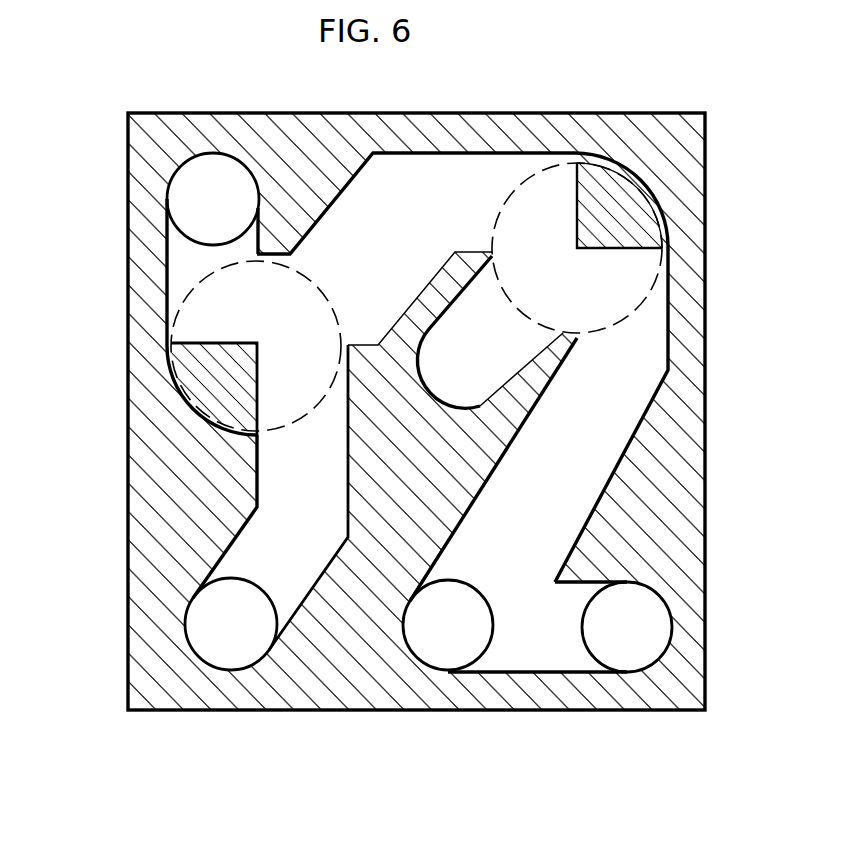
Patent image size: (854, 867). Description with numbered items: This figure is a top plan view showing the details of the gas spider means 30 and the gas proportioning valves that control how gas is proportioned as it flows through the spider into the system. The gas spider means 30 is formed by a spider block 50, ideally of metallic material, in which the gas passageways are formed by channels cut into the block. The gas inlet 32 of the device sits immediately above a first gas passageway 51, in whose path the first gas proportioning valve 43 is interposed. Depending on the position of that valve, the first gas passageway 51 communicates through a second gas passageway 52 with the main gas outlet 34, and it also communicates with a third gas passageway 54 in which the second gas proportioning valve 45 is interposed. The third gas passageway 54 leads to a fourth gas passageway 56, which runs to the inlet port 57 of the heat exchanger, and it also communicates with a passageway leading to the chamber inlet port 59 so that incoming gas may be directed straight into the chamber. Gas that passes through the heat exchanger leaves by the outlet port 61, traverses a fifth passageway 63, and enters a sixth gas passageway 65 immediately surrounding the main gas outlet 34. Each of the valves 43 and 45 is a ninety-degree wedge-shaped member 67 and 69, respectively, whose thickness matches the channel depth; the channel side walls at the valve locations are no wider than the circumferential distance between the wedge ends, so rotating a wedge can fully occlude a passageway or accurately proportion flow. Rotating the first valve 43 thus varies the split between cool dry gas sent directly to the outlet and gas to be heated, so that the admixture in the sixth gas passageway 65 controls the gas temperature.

The gas spider means 30 is at (120, 457).
The gas inlet 32 is at (453, 388).
The main gas outlet 34 is at (440, 654).
The first gas proportioning valve 43 is at (672, 205).
The second gas proportioning valve 45 is at (185, 391).
The spider block 50 is at (142, 254).
The first gas passageway 51 is at (507, 352).
The second gas passageway 52 is at (588, 448).
The third gas passageway 54 is at (410, 168).
The fourth gas passageway 56 is at (278, 490).
The inlet port 57 is at (215, 622).
The chamber inlet port 59 is at (197, 186).
The outlet port 61 is at (634, 657).
The fifth passageway 63 is at (557, 653).
The sixth gas passageway 65 is at (507, 653).
The wedge-shaped member 67 is at (642, 237).
The wedge-shaped member 69 is at (203, 361).